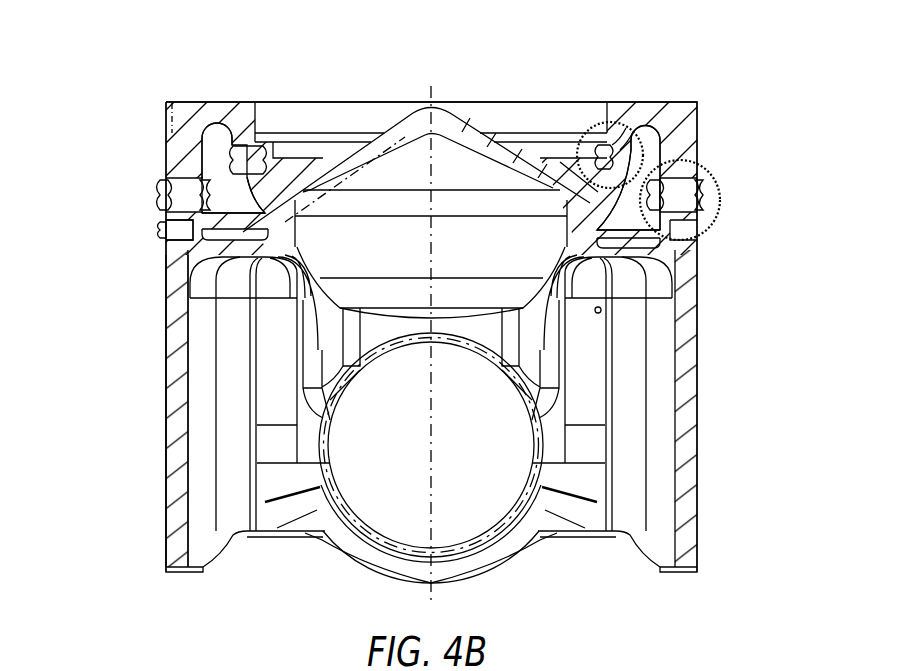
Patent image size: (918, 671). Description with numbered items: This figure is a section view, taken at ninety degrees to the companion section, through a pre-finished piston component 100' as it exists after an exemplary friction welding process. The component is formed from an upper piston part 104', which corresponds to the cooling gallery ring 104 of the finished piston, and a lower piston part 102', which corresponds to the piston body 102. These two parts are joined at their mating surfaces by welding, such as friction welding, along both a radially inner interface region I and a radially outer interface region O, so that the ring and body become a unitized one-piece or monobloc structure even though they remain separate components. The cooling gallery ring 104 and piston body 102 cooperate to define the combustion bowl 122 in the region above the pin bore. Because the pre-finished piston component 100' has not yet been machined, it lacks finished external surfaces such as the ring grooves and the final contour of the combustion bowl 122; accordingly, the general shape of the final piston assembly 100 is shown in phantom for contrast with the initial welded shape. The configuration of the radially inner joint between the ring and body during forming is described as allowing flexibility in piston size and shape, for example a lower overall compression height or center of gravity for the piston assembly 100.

The pre-finished piston component 100' is at (459, 299).
The piston assembly 100 is at (480, 343).
The cooling gallery ring 104 is at (418, 138).
The upper piston part 104' is at (168, 159).
The piston body 102 is at (140, 238).
The lower piston part 102' is at (125, 411).
The combustion bowl 122 is at (490, 140).
The radially inner interface region I is at (587, 128).
The radially outer interface region O is at (708, 237).